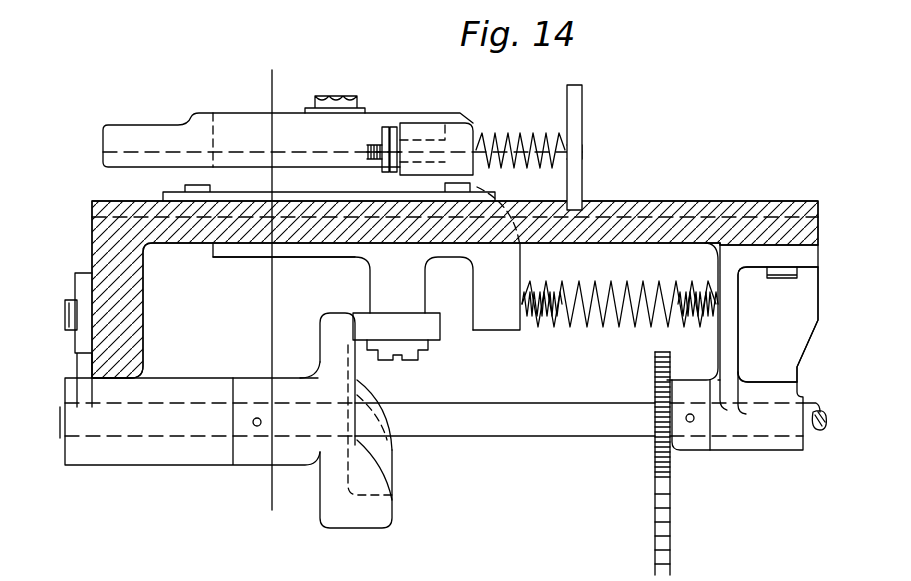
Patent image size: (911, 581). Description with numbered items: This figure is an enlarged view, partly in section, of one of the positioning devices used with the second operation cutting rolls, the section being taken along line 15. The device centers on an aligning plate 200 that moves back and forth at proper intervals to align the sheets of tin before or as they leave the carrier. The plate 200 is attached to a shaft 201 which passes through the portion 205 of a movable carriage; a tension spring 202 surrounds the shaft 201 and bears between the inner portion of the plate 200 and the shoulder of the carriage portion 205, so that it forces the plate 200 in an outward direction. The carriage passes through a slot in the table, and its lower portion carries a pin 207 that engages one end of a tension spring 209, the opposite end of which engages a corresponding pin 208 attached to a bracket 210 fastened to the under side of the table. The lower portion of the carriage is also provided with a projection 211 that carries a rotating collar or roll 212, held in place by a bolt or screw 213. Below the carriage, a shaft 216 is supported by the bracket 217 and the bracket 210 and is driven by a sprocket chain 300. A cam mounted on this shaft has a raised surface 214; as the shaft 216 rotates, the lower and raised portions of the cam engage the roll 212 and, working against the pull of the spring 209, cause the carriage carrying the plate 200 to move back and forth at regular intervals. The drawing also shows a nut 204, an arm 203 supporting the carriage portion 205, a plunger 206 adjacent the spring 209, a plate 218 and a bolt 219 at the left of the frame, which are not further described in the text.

The section line 15 is at (270, 290).
The aligning plate 200 is at (582, 98).
The shaft 201 is at (483, 138).
The tension spring 202 is at (537, 124).
The arm 203 is at (403, 101).
The nut / bolt 204 is at (338, 86).
The carriage portion 205 is at (430, 133).
The plunger 206 is at (513, 332).
The pin 207 is at (553, 288).
The pin 208 is at (687, 280).
The tension spring 209 is at (628, 320).
The bracket 210 is at (735, 353).
The projection 211 is at (370, 285).
The roll 212 is at (440, 338).
The bolt or screw 213 is at (408, 363).
The raised surface 214 is at (383, 499).
The shaft 216 is at (560, 422).
The bracket 217 is at (157, 450).
The plate 218 is at (77, 290).
The bolt 219 is at (65, 317).
The sprocket chain 300 is at (672, 478).